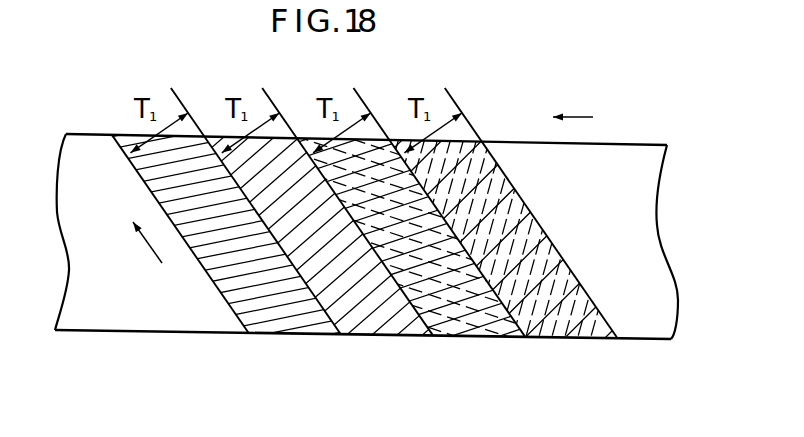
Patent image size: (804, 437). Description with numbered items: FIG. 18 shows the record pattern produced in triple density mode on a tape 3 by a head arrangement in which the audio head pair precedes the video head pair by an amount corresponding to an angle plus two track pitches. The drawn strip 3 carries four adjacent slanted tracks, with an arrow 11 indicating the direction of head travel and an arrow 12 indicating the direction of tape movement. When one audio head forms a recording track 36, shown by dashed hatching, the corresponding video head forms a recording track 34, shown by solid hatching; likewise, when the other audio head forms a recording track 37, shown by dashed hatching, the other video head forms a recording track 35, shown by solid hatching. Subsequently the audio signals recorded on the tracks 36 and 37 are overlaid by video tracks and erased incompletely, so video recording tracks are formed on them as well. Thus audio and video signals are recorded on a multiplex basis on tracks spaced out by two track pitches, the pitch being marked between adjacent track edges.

The recording medium body 3 is at (658, 224).
The direction of head scanning 11 is at (147, 242).
The direction of medium movement 12 is at (582, 117).
The recording track 34 is at (290, 320).
The recording track 35 is at (380, 322).
The recording track 36 is at (477, 323).
The recording track 37 is at (567, 320).